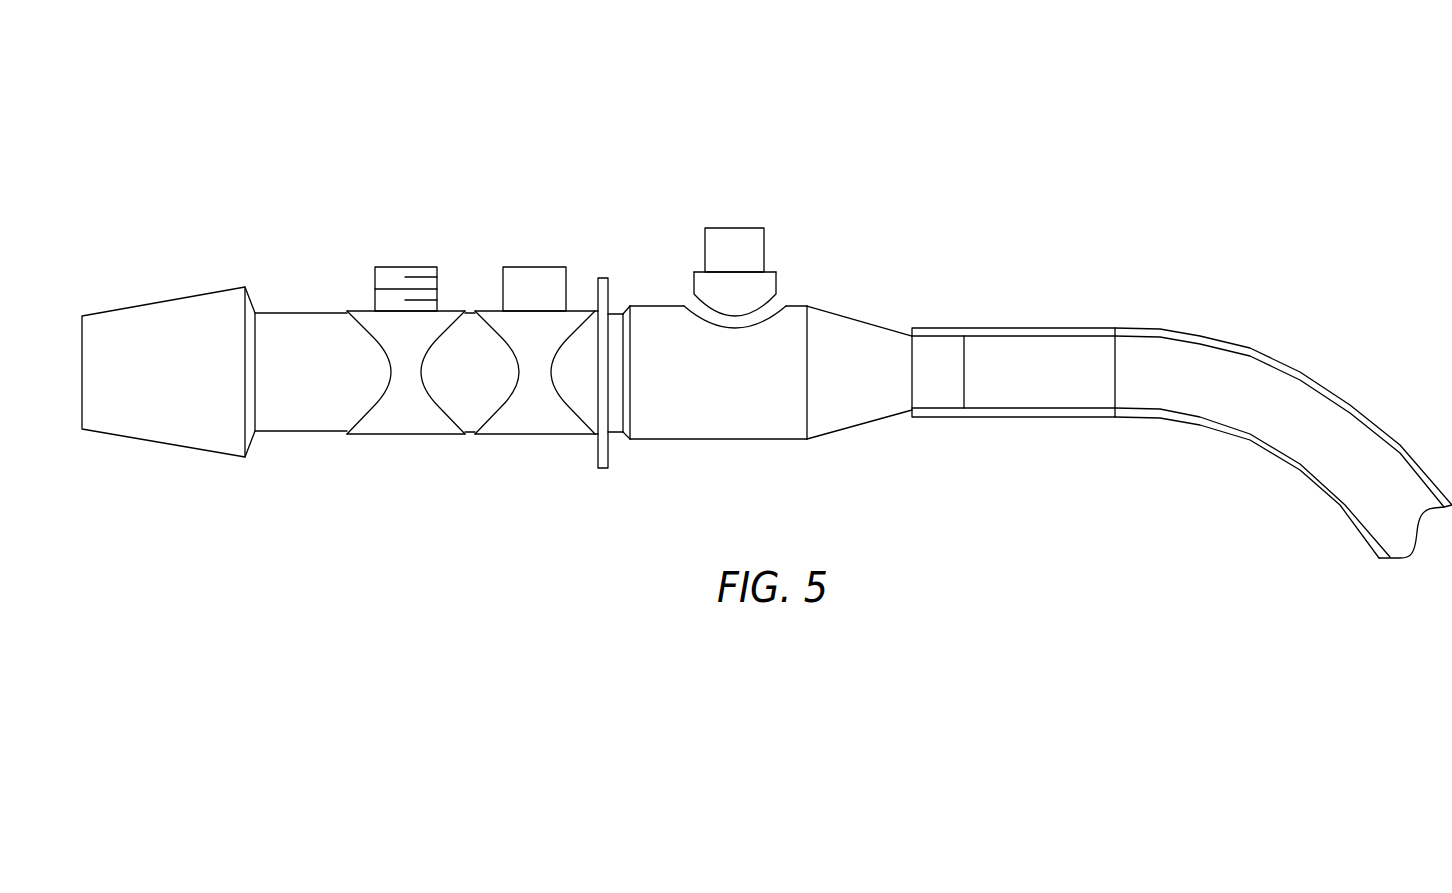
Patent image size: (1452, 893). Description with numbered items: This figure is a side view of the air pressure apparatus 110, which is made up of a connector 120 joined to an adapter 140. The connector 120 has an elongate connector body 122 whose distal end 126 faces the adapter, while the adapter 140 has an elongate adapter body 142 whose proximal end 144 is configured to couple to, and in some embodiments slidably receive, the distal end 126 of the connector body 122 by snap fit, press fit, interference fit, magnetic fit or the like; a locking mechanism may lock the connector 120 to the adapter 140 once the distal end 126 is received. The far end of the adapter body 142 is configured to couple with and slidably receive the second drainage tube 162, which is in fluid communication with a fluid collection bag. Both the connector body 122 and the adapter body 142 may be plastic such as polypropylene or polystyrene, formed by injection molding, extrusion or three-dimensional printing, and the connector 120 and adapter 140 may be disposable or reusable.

The air pressure apparatus 110 is at (634, 162).
The connector 120 is at (333, 220).
The connector body 122 is at (300, 333).
The distal end 126 is at (616, 284).
The adapter 140 is at (848, 207).
The adapter body 142 is at (857, 322).
The proximal end 144 is at (659, 258).
The second drainage tube 162 is at (1178, 370).